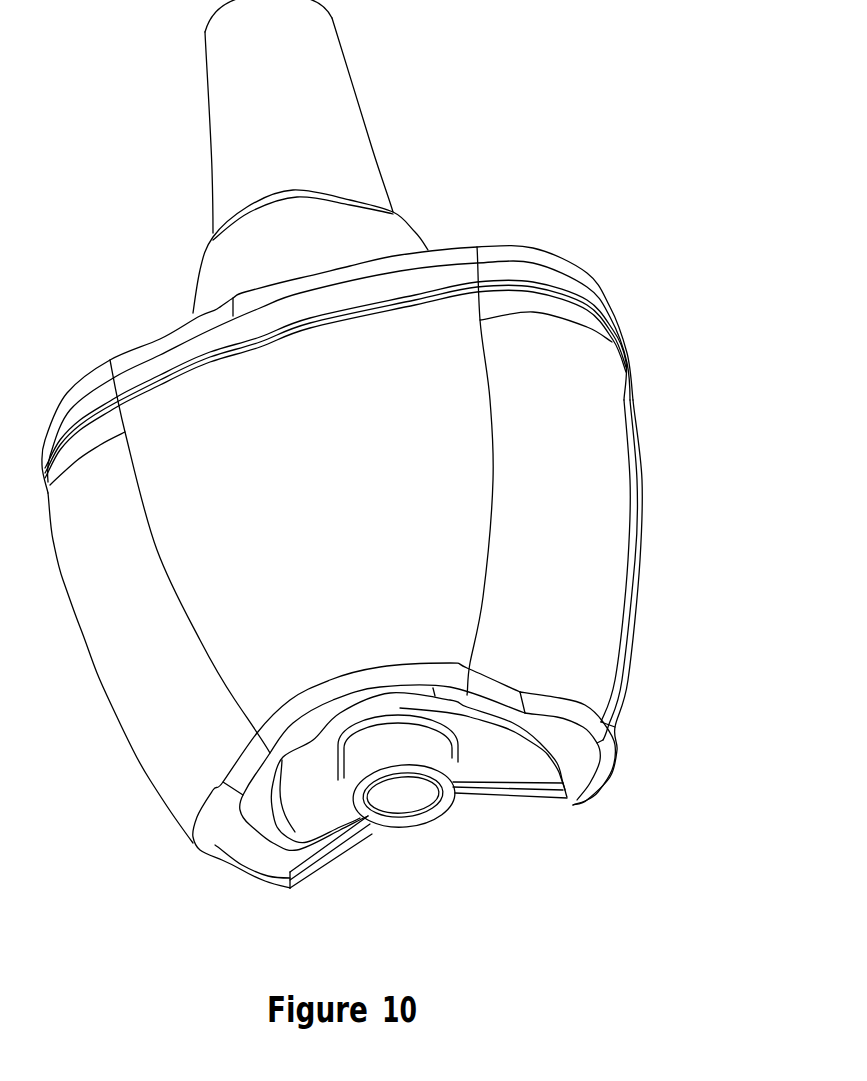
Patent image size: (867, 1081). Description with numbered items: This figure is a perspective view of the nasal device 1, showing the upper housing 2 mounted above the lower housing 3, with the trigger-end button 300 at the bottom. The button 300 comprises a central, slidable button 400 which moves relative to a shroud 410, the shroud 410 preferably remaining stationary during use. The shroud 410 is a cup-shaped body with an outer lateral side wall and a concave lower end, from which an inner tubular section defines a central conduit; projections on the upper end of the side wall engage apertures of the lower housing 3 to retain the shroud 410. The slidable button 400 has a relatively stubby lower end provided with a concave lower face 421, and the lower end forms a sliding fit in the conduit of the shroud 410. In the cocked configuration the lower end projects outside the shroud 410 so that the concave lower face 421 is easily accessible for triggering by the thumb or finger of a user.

The nasal device 1 is at (594, 190).
The upper housing 2 is at (420, 183).
The lower housing 3 is at (670, 487).
The shroud 410 is at (290, 817).
The slidable button 400 is at (390, 837).
The button 300 is at (418, 836).
The concave lower face 421 is at (420, 797).